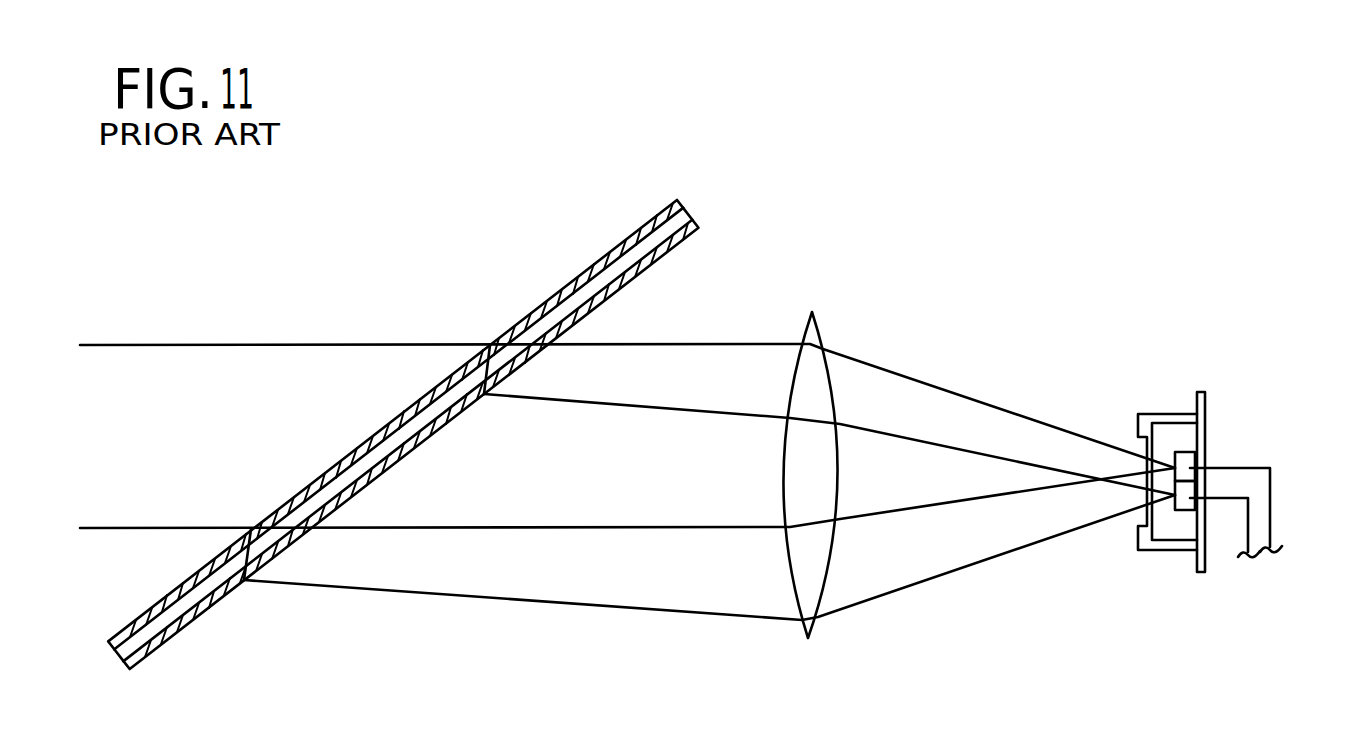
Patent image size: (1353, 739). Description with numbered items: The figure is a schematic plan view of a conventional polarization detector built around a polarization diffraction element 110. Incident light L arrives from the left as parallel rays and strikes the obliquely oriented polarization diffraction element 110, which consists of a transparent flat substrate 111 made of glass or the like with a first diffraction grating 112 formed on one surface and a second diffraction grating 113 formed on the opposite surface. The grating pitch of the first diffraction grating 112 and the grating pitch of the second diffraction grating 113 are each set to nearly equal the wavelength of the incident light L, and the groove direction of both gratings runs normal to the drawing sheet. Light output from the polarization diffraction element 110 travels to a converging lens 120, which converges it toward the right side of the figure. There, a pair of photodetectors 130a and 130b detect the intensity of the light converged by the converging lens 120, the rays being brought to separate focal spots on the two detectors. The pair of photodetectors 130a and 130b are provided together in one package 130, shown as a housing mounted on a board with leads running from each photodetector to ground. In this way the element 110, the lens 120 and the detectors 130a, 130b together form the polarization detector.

The incident light L is at (233, 346).
The polarization diffraction element 110 is at (683, 197).
The transparent flat substrate 111 is at (692, 212).
The first diffraction grating 112 is at (597, 262).
The second diffraction grating 113 is at (652, 265).
The converging lens 120 is at (818, 332).
The package 130 is at (1168, 413).
The photodetector 130a is at (1183, 460).
The photodetector 130b is at (1187, 513).